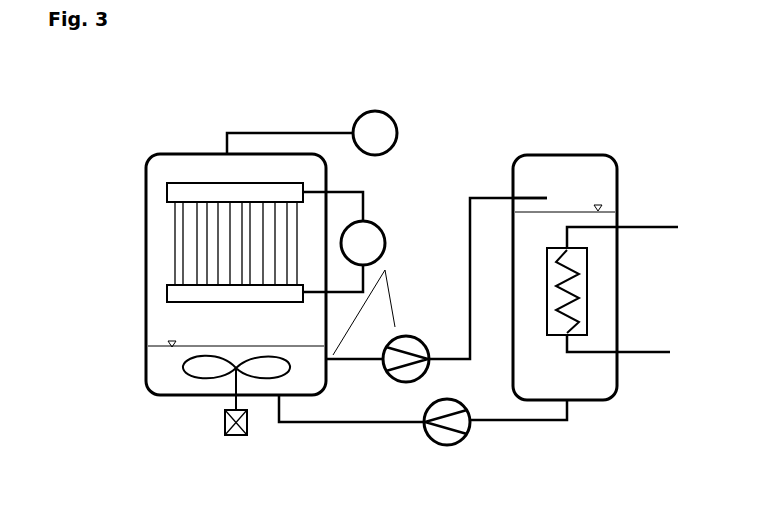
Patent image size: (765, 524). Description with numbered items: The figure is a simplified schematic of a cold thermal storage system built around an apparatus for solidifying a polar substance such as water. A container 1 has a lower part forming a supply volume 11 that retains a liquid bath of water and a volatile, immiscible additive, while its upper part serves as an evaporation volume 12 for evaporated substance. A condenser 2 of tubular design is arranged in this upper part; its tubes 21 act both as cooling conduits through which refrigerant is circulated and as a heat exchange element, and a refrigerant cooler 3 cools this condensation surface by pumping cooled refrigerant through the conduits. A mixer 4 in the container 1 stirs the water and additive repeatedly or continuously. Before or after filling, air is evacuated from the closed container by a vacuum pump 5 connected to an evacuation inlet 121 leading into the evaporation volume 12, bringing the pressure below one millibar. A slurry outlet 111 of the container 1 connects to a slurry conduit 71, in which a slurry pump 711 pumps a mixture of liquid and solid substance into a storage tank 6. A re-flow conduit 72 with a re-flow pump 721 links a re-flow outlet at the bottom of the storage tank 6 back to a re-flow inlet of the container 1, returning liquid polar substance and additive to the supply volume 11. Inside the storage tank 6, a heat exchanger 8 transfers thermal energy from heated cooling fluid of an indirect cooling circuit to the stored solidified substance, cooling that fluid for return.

The container 1 is at (182, 223).
The evaporation volume 12 is at (146, 174).
The evacuation inlet 121 is at (226, 143).
The condenser 2 is at (173, 242).
The tubes 21 is at (178, 228).
The supply volume 11 is at (162, 380).
The mixer 4 is at (215, 380).
The vacuum pump 5 is at (360, 130).
The refrigerant cooler 3 is at (378, 237).
The slurry outlet 111 is at (397, 332).
The slurry pump 711 is at (410, 327).
The slurry conduit 71 is at (490, 197).
The storage tank 6 is at (597, 188).
The heat exchanger 8 is at (588, 312).
The re-flow conduit 72 is at (575, 410).
The re-flow pump 721 is at (457, 425).